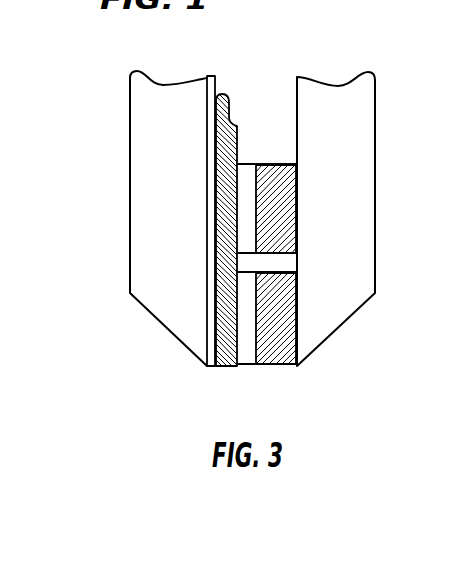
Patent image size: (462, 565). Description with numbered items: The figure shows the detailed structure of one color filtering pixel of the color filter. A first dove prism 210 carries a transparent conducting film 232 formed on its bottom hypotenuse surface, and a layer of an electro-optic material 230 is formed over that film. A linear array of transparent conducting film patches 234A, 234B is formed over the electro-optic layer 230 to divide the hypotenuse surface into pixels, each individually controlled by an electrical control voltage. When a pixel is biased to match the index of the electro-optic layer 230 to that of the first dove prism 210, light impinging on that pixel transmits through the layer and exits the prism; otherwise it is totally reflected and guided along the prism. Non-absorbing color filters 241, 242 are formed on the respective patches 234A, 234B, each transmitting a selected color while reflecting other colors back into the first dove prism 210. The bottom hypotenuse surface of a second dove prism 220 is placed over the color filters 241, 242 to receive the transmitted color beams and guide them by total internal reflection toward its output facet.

The first dove prism 210 is at (137, 218).
The second dove prism 220 is at (369, 212).
The electro-optic material layer 230 is at (212, 367).
The transparent conducting film 232 is at (225, 367).
The transparent conducting film patch 234A is at (250, 366).
The transparent conducting film patch 234B is at (288, 86).
The non-absorbing color filter 241 is at (272, 366).
The non-absorbing color filter 242 is at (289, 156).